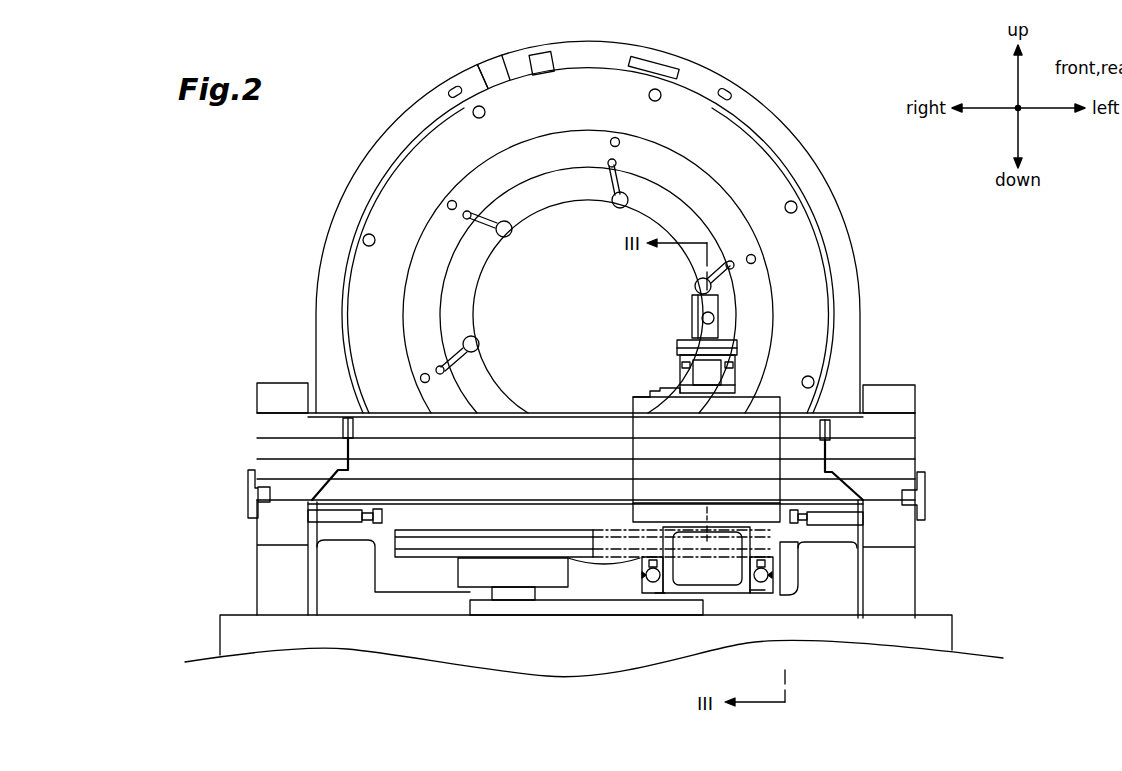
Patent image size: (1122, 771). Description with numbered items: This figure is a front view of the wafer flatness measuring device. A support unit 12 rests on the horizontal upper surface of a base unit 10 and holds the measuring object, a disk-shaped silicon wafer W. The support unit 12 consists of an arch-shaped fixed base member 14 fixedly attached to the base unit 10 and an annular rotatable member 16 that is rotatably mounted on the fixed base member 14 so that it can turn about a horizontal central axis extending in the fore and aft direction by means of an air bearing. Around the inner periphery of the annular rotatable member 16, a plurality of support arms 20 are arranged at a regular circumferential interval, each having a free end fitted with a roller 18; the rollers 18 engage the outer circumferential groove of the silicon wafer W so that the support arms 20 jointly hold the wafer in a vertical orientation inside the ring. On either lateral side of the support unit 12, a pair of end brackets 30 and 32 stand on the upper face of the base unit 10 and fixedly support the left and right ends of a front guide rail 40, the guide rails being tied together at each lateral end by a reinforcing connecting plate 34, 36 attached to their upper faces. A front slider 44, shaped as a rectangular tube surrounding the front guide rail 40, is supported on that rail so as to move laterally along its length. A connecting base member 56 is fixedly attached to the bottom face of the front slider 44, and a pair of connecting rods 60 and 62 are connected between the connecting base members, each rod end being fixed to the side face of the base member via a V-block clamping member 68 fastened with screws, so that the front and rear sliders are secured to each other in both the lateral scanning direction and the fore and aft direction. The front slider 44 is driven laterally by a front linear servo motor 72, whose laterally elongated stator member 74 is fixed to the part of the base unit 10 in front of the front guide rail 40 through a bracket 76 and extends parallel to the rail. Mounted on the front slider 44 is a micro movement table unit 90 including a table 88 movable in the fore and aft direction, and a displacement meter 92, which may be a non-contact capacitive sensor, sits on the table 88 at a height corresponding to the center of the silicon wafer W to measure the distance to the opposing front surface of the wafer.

The base unit 10 is at (941, 614).
The support unit 12 is at (762, 94).
The fixed base member 14 is at (697, 88).
The annular rotatable member 16 is at (723, 145).
The roller 18 is at (628, 203).
The support arm 20 is at (622, 183).
The end bracket 30 is at (270, 582).
The end bracket 32 is at (902, 568).
The reinforcing connecting plate 34 is at (285, 393).
The reinforcing connecting plate 36 is at (900, 395).
The front guide rail 40 is at (548, 416).
The front slider 44 is at (760, 438).
The connecting base member 56 is at (717, 594).
The connecting rod 60 is at (660, 590).
The connecting rod 62 is at (757, 595).
The V-block clamping member 68 is at (643, 590).
The front linear servo motor 72 is at (468, 547).
The stator member 74 is at (557, 545).
The bracket 76 is at (512, 596).
The table 88 is at (735, 341).
The micro movement table unit 90 is at (735, 369).
The displacement meter 92 is at (716, 303).
The silicon wafer W is at (497, 283).